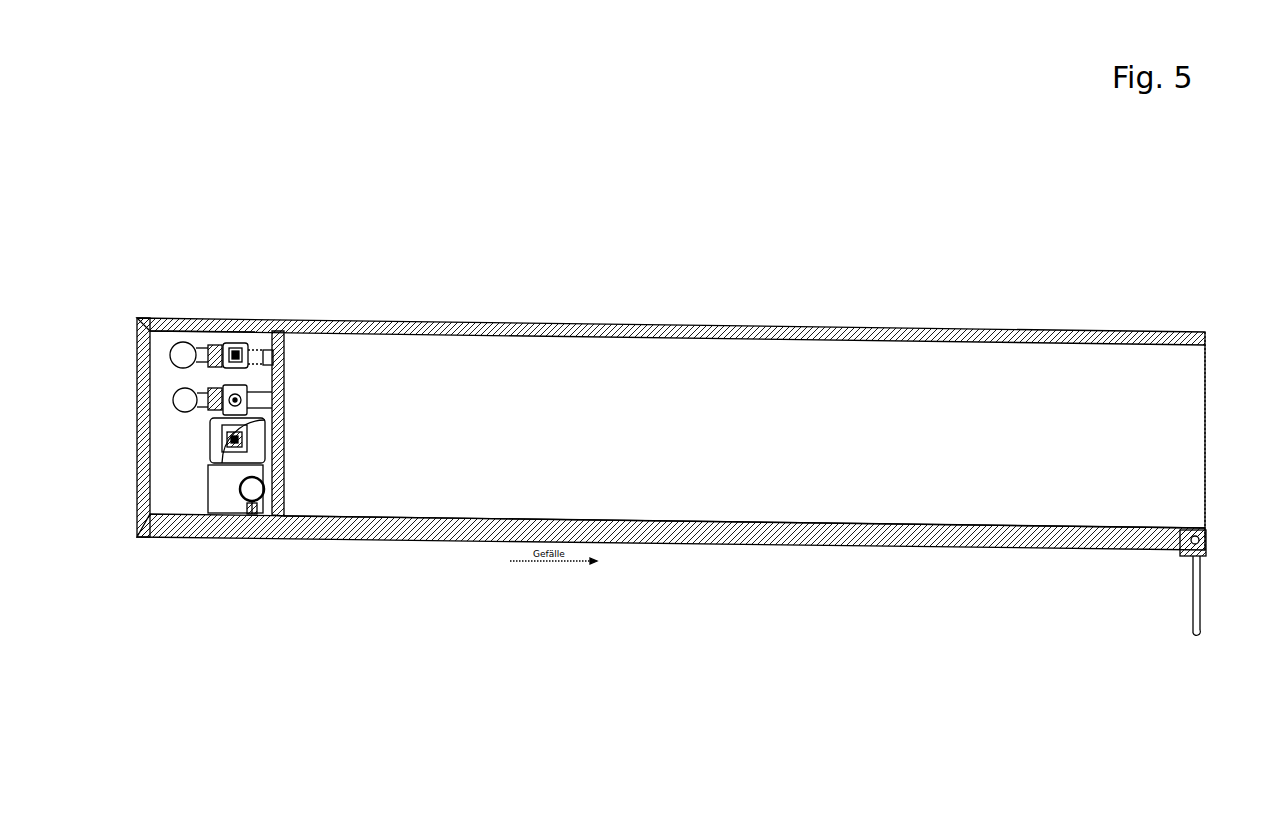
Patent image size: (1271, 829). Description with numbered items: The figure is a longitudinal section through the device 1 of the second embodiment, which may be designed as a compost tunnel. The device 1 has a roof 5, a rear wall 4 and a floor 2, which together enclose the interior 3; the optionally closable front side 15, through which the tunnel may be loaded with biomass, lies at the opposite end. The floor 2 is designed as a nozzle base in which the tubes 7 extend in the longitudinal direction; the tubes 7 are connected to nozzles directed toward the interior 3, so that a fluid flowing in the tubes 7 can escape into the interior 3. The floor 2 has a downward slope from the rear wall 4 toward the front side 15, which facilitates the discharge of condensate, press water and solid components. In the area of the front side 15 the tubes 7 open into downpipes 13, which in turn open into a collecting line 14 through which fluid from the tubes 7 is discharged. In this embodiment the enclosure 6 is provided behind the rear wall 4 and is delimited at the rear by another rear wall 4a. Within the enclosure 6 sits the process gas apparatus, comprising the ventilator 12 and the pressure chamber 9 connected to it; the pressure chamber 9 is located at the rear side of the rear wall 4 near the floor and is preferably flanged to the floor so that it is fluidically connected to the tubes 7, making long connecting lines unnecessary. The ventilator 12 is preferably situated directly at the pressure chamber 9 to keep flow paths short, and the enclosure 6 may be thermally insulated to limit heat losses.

The device 1 is at (742, 217).
The floor 2 is at (325, 540).
The interior 3 is at (679, 421).
The rear wall 4 is at (268, 470).
The another rear wall 4a is at (137, 318).
The roof 5 is at (395, 325).
The enclosure 6 is at (192, 318).
The tubes 7 is at (725, 530).
The pressure chamber 9 is at (254, 486).
The ventilator 12 is at (190, 475).
The downpipes 13 is at (1185, 572).
The collecting line 14 is at (1185, 643).
The front side 15 is at (1216, 415).